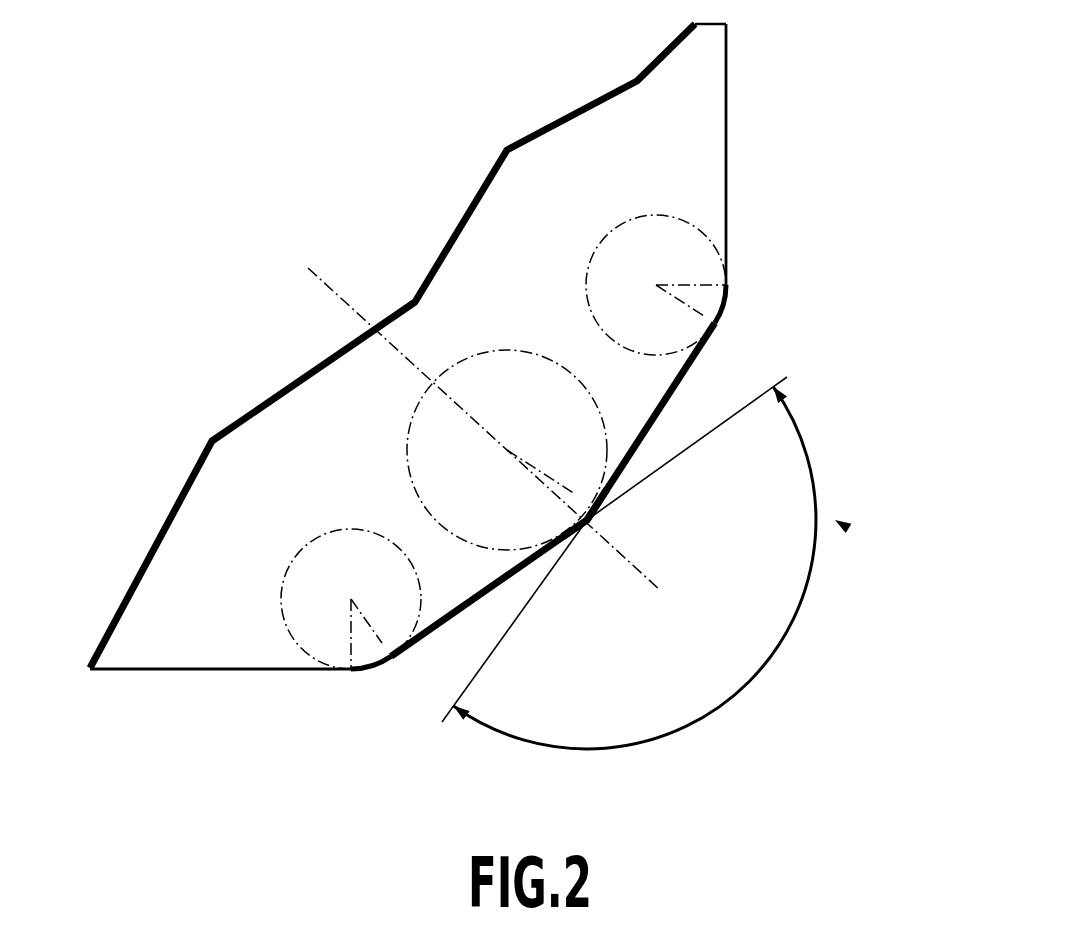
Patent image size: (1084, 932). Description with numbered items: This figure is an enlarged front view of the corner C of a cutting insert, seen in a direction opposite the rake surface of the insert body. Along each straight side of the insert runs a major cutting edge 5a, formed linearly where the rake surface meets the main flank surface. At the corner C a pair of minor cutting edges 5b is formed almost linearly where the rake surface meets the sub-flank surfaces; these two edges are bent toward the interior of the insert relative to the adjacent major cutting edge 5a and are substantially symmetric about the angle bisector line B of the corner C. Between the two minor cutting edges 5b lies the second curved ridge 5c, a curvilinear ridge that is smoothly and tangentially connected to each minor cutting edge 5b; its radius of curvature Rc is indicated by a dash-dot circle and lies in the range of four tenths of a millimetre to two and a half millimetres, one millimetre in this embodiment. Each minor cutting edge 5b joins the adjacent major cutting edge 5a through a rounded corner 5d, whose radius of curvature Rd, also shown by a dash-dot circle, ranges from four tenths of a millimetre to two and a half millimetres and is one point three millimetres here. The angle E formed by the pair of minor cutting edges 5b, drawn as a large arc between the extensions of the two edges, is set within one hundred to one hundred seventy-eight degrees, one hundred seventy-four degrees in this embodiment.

The major cutting edge 5a is at (726, 192).
The minor cutting edges 5b is at (663, 415).
The second curved ridge 5c is at (595, 515).
The rounded corner 5d is at (726, 314).
The radius of curvature for the rounded corner Rd is at (706, 311).
The radius of curvature for the second curved ridge Rc is at (573, 503).
The bisector line B is at (493, 438).
The corner C is at (848, 526).
The angle formed by the pair of minor cutting edges E is at (753, 670).